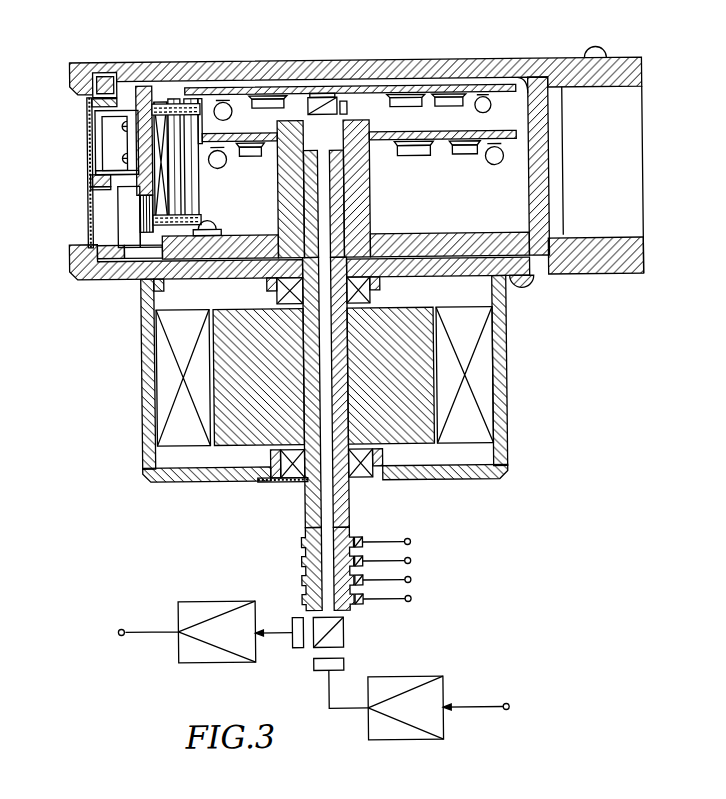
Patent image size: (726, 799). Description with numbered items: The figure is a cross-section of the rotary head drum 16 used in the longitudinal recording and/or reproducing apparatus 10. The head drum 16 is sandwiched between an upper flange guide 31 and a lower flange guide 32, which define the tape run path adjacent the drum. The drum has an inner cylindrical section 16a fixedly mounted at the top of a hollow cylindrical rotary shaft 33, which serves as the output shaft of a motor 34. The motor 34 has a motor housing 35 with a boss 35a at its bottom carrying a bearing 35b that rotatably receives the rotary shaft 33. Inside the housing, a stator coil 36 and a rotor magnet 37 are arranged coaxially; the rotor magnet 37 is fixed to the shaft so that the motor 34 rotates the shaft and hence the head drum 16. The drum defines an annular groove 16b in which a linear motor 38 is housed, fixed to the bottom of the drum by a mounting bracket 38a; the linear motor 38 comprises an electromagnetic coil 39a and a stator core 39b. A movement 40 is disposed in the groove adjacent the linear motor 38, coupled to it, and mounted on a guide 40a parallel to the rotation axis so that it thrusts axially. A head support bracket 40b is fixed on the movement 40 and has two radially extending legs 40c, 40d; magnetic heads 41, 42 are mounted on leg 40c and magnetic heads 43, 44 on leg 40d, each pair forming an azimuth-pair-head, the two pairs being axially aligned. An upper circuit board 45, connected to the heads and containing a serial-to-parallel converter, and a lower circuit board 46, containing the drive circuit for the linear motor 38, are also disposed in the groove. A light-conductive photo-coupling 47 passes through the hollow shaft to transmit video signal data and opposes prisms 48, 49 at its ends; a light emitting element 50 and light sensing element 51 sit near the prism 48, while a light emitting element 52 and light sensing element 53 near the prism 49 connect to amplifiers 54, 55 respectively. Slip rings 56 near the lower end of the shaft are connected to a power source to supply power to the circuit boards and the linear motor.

The frame member 10 is at (140, 210).
The rotary head drum 16 is at (551, 182).
The inner cylindrical section 16a is at (370, 176).
The annular groove 16b is at (527, 103).
The flange guide 31 is at (75, 60).
The flange guide 32 is at (96, 278).
The rotary shaft 33 is at (343, 211).
The motor 34 is at (136, 367).
The motor housing 35 is at (507, 392).
The boss 35a is at (252, 479).
The bearing 35b is at (289, 481).
The stator coil 36 is at (184, 444).
The rotor magnet 37 is at (422, 444).
The linear motor 38 is at (164, 100).
The mounting bracket 38a is at (203, 127).
The electromagnetic coil 39a is at (190, 183).
The stator core 39b is at (174, 105).
The movement 40 is at (146, 84).
The guide 40a is at (122, 205).
The head support bracket 40b is at (110, 72).
The leg 40c is at (100, 132).
The leg 40d is at (122, 172).
The magnetic head 41 is at (90, 102).
The magnetic head 42 is at (95, 103).
The magnetic head 43 is at (93, 176).
The magnetic head 44 is at (93, 185).
The upper circuit board 45 is at (236, 86).
The lower circuit board 46 is at (443, 158).
The photo-coupling 47 is at (334, 326).
The prism 48 is at (327, 97).
The prism 49 is at (343, 637).
The light emitting element 50 is at (350, 108).
The light sensing element 51 is at (315, 93).
The light emitting element 52 is at (293, 648).
The light sensing element 53 is at (343, 664).
The amplifier 54 is at (208, 600).
The amplifier 55 is at (405, 677).
The slip rings 56 is at (371, 535).